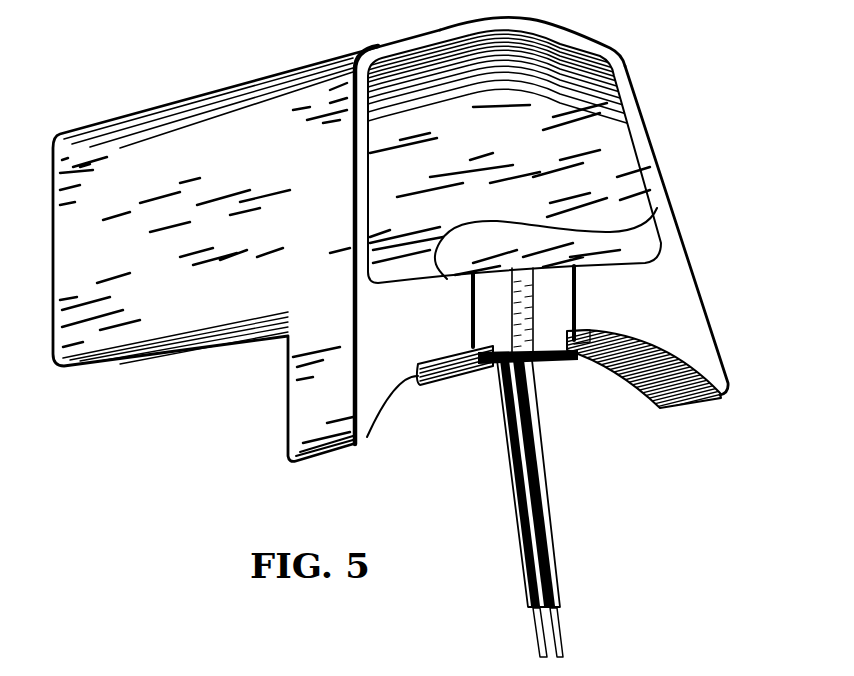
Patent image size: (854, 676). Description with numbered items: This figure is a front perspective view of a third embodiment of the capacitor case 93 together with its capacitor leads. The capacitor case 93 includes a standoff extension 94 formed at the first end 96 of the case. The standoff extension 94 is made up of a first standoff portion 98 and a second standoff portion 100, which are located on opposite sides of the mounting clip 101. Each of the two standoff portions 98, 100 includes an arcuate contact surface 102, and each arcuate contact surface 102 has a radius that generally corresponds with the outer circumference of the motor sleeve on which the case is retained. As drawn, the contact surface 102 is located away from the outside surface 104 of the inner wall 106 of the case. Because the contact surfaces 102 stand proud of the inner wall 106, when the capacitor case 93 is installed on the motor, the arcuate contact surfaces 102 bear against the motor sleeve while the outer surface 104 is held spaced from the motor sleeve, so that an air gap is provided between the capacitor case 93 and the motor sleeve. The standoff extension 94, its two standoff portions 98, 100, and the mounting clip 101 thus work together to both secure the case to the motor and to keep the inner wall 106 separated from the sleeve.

The capacitor case 93 is at (50, 400).
The standoff extension 94 is at (606, 402).
The first end 96 is at (762, 340).
The first standoff portion 98 is at (373, 388).
The second standoff portion 100 is at (680, 285).
The mounting clip 101 is at (556, 384).
The arcuate contact surface 102 is at (408, 378).
The outside surface 104 is at (197, 346).
The inner wall 106 is at (648, 217).